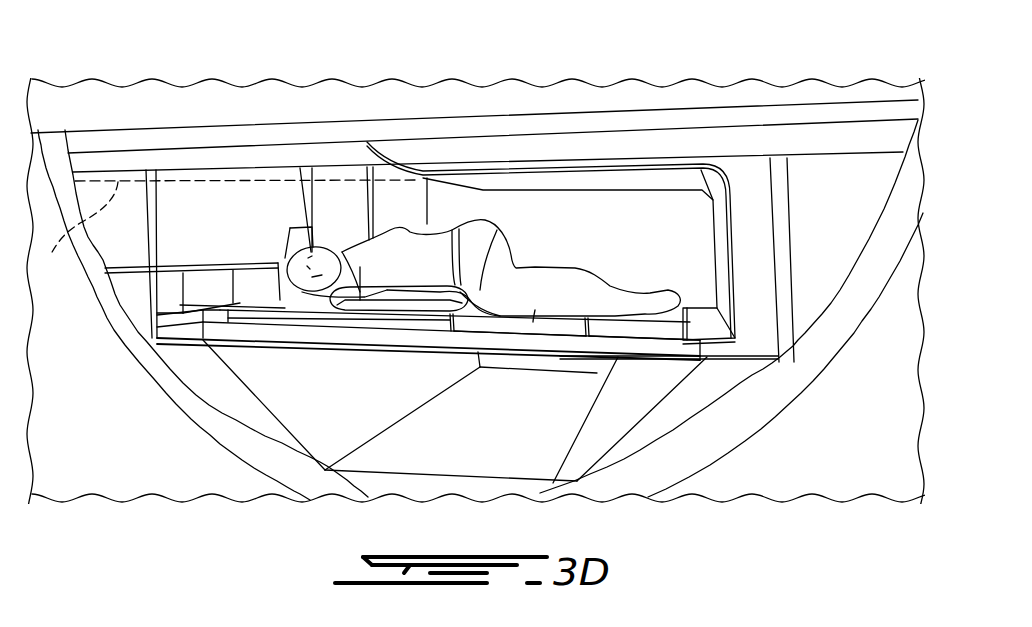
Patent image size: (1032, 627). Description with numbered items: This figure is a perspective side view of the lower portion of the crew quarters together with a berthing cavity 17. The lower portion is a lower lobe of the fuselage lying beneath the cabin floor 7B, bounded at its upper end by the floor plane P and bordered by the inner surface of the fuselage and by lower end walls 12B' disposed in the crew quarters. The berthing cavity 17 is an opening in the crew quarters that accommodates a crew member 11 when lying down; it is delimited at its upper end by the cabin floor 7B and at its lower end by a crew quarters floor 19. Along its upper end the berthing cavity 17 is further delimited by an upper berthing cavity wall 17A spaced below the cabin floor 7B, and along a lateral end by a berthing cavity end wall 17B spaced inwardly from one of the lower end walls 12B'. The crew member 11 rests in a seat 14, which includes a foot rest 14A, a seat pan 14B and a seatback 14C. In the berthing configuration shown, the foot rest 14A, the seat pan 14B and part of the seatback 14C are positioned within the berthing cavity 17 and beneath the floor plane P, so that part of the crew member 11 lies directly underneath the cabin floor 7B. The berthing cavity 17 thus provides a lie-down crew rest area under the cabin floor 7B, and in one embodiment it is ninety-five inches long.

The berthing cavity 17 is at (609, 184).
The cabin floor 7B is at (665, 123).
The upper berthing cavity wall 17A is at (685, 177).
The berthing cavity end wall 17B is at (735, 253).
The lower end wall 12B' is at (480, 310).
The floor plane P is at (227, 232).
The seat 14 is at (432, 394).
The foot rest 14A is at (625, 340).
The seat pan 14B is at (532, 336).
The seatback 14C is at (332, 330).
The crew member 11 is at (387, 268).
The crew quarters floor 19 is at (655, 360).